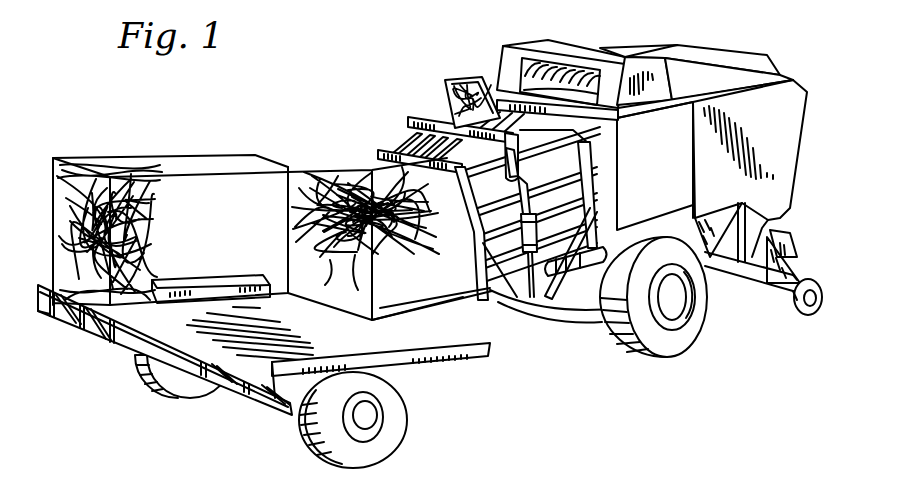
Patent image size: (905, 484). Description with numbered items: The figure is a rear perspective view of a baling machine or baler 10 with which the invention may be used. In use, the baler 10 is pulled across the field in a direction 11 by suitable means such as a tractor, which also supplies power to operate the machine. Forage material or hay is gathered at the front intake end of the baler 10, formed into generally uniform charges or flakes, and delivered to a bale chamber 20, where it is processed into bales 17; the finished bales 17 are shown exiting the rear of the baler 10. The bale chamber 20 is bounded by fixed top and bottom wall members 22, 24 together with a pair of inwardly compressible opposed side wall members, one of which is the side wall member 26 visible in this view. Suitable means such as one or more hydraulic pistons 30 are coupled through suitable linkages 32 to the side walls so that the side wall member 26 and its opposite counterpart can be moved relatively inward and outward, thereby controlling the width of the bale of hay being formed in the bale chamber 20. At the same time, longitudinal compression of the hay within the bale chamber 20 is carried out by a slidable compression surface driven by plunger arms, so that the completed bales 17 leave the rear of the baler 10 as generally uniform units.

The baling machine or baler 10 is at (621, 178).
The direction 11 is at (762, 25).
The bales 17 is at (328, 168).
The bale chamber 20 is at (514, 199).
The top wall member 22 is at (462, 110).
The bottom wall member 24 is at (494, 292).
The side wall member 26 is at (501, 296).
The hydraulic piston 30 is at (545, 210).
The linkage 32 is at (538, 172).